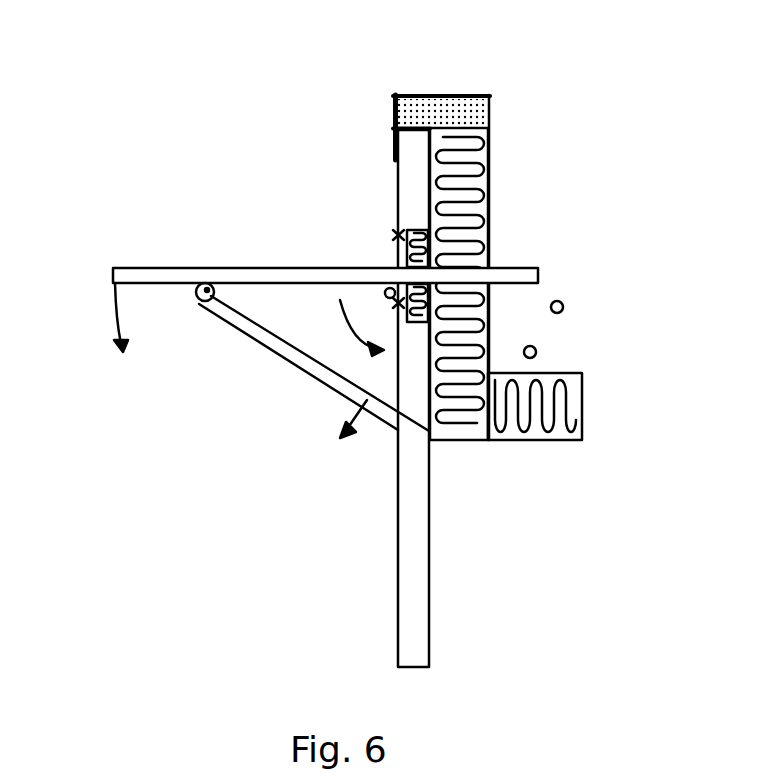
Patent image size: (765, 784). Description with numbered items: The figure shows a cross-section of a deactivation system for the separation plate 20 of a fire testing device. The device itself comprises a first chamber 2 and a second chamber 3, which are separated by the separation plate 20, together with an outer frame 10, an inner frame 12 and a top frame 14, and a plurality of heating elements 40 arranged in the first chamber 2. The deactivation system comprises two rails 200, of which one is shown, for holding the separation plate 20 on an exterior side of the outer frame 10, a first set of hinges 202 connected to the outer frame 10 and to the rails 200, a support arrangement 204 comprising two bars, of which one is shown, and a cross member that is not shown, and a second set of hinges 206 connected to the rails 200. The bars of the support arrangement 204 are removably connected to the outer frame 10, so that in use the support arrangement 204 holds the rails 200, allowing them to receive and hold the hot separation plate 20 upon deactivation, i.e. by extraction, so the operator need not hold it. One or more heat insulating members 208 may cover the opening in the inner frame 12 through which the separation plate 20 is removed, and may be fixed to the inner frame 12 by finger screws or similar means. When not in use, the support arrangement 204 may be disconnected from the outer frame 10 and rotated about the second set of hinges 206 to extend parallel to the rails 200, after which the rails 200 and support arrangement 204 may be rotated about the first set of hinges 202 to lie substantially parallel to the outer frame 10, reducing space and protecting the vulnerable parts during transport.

The first chamber 2 is at (512, 318).
The second chamber 3 is at (515, 232).
The outer frame 10 is at (412, 608).
The inner frame 12 is at (490, 201).
The top frame 14 is at (470, 95).
The separation plate 20 is at (508, 276).
The heating elements 40 is at (536, 349).
The rails 200 is at (369, 252).
The first set of hinges 202 is at (389, 289).
The support arrangement 204 is at (315, 373).
The second set of hinges 206 is at (197, 300).
The heat insulating members 208 is at (399, 232).